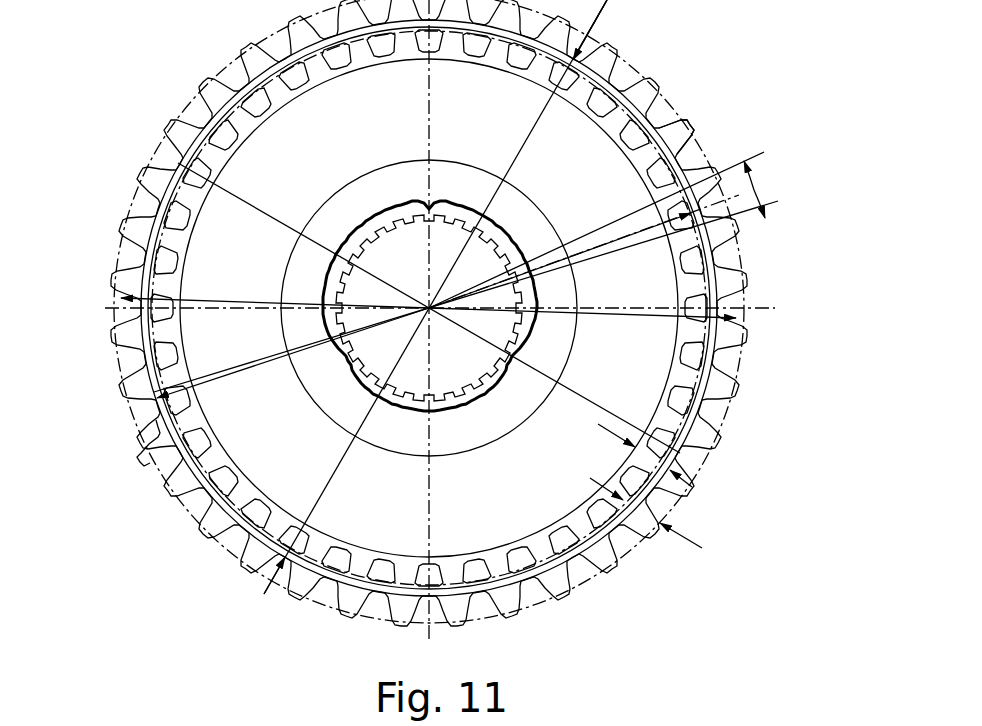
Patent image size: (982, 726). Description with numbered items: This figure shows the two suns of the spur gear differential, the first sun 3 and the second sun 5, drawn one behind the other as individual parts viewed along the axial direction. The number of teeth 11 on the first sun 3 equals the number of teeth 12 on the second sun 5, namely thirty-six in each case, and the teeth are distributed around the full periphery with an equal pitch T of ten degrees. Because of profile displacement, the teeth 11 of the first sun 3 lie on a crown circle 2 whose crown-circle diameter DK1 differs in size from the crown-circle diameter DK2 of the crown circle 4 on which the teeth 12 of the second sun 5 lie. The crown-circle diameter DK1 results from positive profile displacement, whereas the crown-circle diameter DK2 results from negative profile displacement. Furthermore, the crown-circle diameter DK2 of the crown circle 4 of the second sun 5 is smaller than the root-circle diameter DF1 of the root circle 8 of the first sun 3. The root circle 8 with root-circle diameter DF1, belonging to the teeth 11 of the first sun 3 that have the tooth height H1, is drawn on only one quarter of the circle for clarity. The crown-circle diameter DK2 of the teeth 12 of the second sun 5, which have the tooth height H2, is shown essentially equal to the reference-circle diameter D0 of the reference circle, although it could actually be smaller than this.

The crown circle 2 is at (760, 326).
The first sun 3 is at (388, 618).
The crown circle 4 is at (712, 384).
The second sun 5 is at (478, 520).
The root circle 8 is at (692, 132).
The teeth 11 is at (165, 456).
The teeth 12 is at (290, 545).
The crown-circle diameter DK1 is at (740, 312).
The reference-circle diameter D0 is at (622, 50).
The pitch T is at (607, 230).
The root-circle diameter DF1 is at (120, 377).
The crown-circle diameter DK2 is at (600, 425).
The tooth height H1 is at (648, 522).
The tooth height H2 is at (697, 540).